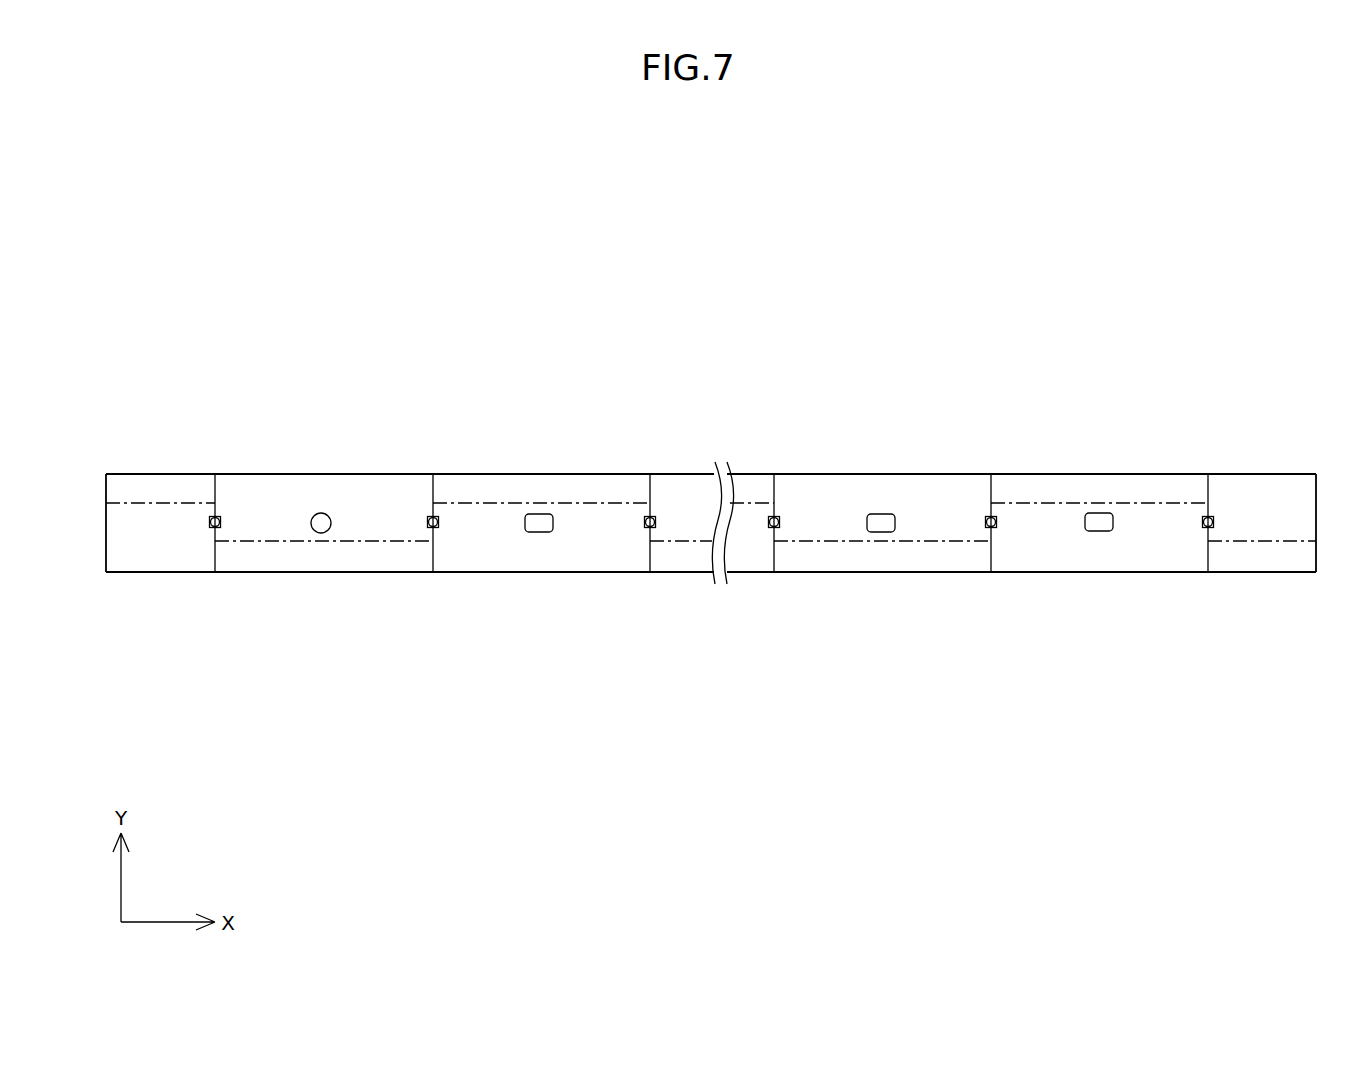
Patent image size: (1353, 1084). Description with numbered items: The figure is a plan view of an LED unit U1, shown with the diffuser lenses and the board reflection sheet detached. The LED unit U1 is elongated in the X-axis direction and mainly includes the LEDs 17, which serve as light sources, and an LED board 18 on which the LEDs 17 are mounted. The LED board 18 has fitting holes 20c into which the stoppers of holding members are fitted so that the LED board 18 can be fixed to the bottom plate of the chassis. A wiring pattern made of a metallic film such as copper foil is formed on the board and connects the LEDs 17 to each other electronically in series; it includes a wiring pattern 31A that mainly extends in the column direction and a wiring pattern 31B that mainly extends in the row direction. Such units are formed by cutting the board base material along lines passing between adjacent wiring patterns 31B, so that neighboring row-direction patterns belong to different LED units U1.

The LED unit U1 is at (160, 415).
The LED 17 is at (221, 521).
The LED board 18 is at (153, 548).
The fitting hole 20c is at (318, 527).
The wiring pattern 31A is at (215, 563).
The wiring pattern 31B is at (1312, 418).